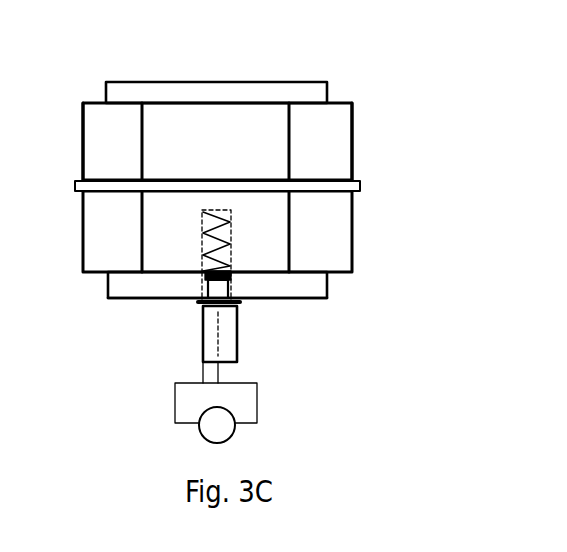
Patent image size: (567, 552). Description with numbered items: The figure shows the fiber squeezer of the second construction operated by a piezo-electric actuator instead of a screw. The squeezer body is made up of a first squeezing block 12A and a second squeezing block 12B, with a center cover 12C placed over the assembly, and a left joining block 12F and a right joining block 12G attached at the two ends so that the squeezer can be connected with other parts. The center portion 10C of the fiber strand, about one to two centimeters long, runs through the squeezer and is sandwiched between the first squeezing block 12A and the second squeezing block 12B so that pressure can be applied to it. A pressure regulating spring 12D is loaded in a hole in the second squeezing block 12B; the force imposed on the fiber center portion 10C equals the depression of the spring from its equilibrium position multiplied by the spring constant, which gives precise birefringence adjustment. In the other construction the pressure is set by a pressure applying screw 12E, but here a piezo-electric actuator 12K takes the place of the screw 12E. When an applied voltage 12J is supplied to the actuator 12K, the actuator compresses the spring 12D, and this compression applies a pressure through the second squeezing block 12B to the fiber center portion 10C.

The center cover 12C is at (133, 88).
The first squeezing block 12A is at (242, 118).
The left joining block 12F is at (86, 124).
The right joining block 12G is at (334, 127).
The center portion of fiber strand 10C is at (77, 186).
The pressure regulating spring 12D is at (230, 222).
The pressure applying screw 12E is at (277, 303).
The second squeezing block 12B is at (280, 265).
The piezo-electric actuator 12K is at (238, 350).
The applied voltage 12J is at (198, 432).